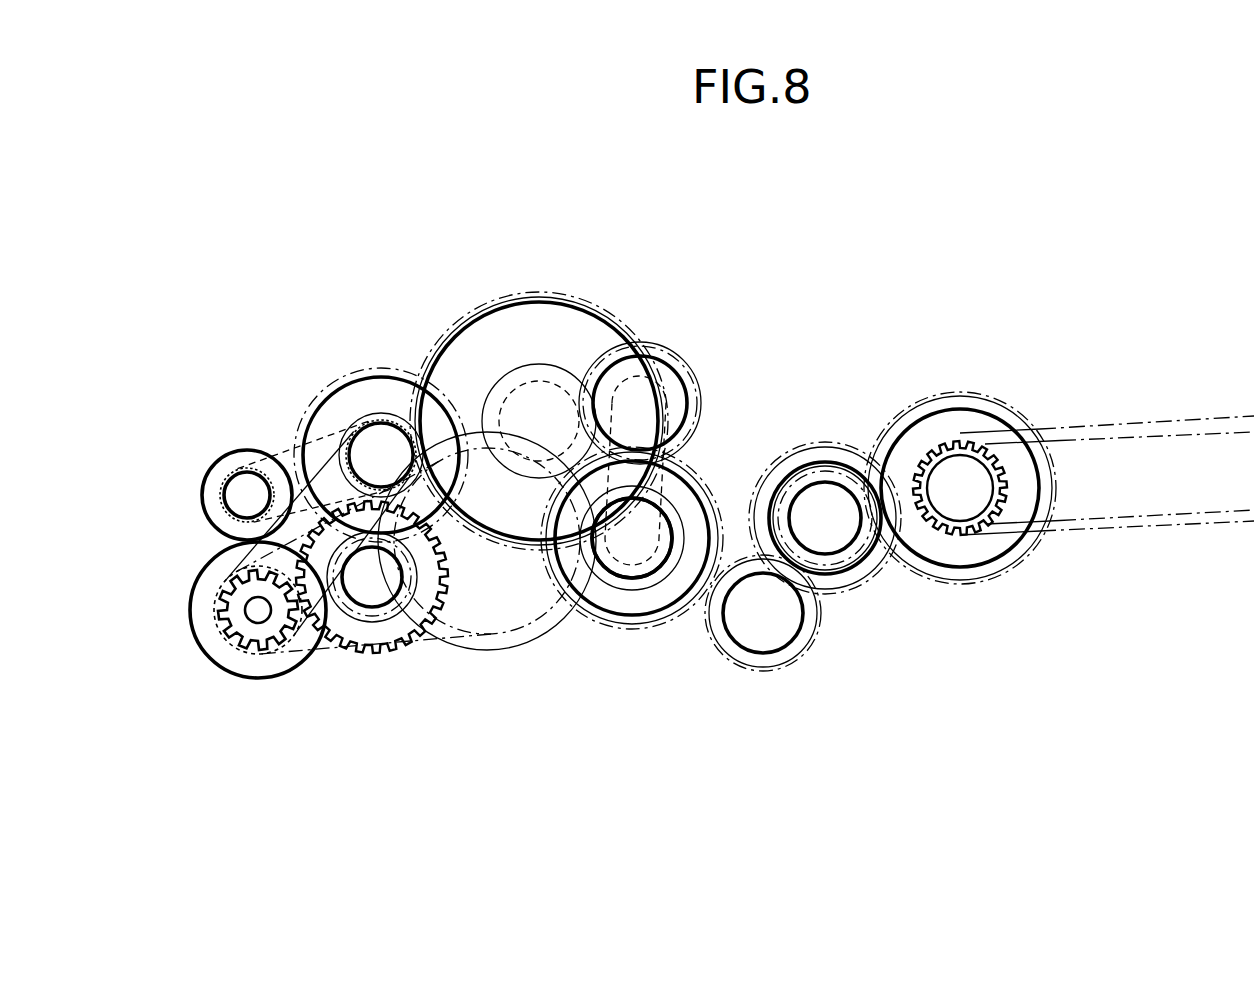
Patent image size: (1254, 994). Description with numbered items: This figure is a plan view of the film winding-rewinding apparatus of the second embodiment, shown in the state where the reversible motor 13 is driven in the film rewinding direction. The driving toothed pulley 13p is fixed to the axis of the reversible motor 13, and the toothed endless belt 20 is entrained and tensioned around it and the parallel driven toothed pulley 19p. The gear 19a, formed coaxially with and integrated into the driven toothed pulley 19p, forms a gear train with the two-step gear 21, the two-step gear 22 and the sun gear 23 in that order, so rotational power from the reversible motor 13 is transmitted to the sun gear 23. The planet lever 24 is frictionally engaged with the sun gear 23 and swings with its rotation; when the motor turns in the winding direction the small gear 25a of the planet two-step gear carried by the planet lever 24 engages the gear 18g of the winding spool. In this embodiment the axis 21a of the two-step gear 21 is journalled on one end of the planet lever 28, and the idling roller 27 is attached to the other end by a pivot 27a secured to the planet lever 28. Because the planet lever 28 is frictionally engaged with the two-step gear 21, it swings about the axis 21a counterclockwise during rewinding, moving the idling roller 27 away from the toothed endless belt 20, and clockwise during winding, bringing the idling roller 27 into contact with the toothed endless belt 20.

The reversible motor 13 is at (232, 678).
The driving toothed pulley 13p is at (222, 630).
The gear for winding-power transmission mechanism 18g is at (506, 612).
The gear 19a is at (373, 600).
The driven toothed pulley 19p is at (393, 655).
The toothed endless belt 20 is at (332, 665).
The two-step gear 21 is at (393, 392).
The axis of the two-step gear 21a is at (373, 445).
The two-step gear 22 is at (549, 318).
The sun gear 23 is at (676, 390).
The planet lever 24 is at (686, 467).
The small gear 25a is at (633, 580).
The idling roller 27 is at (223, 470).
The pivot 27a is at (228, 497).
The planet lever 28 is at (282, 453).